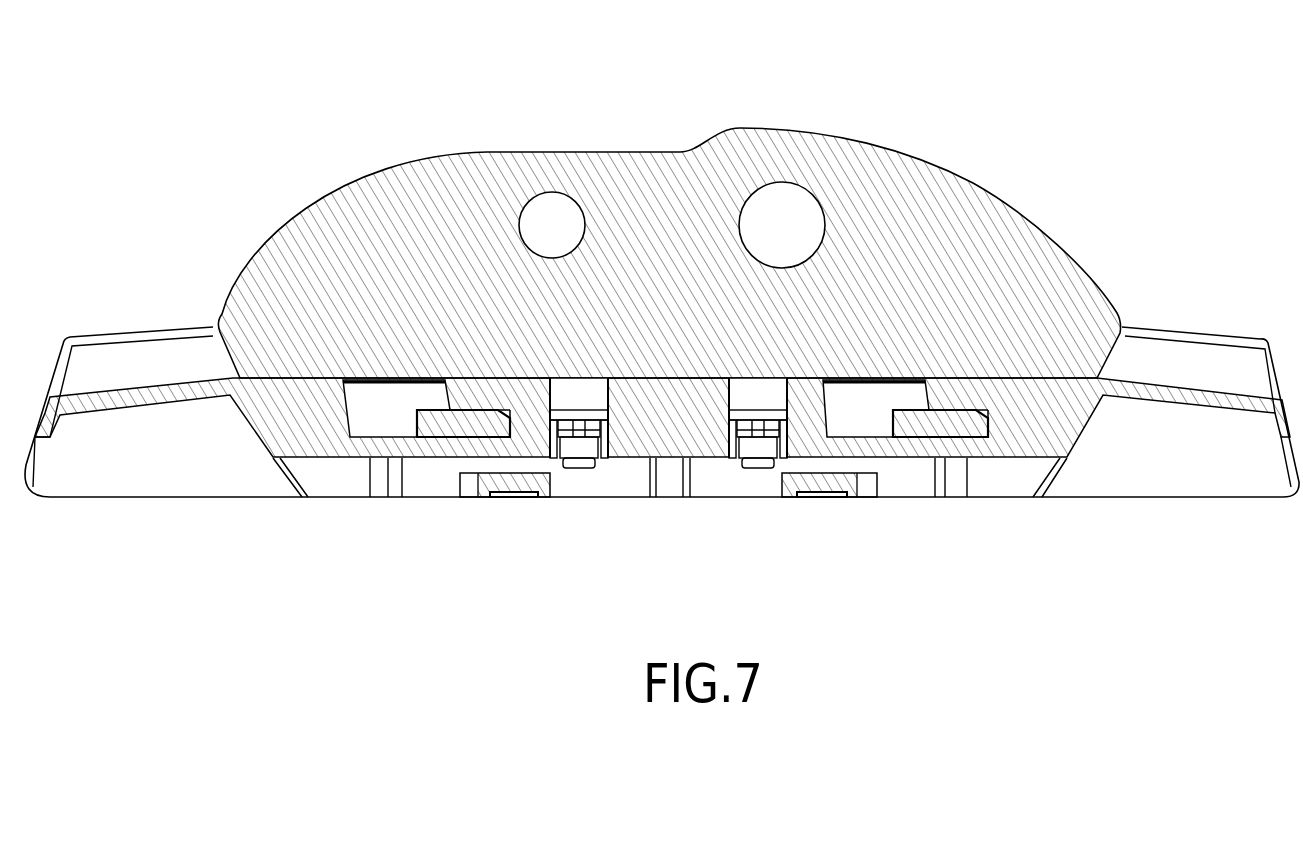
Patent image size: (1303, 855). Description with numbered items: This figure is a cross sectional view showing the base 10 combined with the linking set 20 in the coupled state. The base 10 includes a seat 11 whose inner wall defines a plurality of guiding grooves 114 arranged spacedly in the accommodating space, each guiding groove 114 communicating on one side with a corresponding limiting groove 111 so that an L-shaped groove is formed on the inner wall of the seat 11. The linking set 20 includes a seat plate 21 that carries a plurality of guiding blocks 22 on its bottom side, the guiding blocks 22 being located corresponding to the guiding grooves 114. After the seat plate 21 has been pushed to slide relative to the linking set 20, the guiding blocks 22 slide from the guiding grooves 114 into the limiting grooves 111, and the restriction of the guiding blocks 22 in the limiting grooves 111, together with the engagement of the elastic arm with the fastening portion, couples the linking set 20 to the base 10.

The base 10 is at (1226, 296).
The seat 11 is at (277, 428).
The linking set 20 is at (859, 118).
The seat plate 21 is at (767, 408).
The guiding blocks 22 is at (455, 428).
The limiting grooves 111 is at (510, 413).
The guiding grooves 114 is at (372, 428).